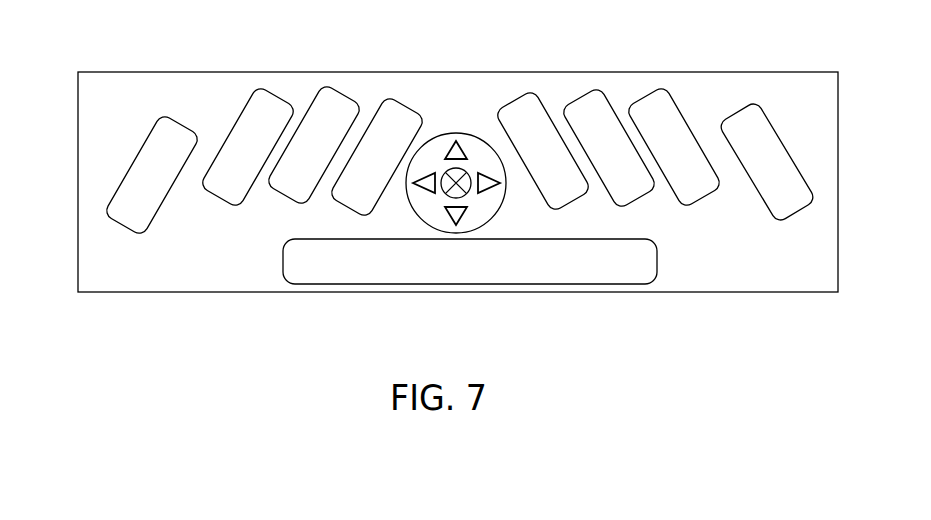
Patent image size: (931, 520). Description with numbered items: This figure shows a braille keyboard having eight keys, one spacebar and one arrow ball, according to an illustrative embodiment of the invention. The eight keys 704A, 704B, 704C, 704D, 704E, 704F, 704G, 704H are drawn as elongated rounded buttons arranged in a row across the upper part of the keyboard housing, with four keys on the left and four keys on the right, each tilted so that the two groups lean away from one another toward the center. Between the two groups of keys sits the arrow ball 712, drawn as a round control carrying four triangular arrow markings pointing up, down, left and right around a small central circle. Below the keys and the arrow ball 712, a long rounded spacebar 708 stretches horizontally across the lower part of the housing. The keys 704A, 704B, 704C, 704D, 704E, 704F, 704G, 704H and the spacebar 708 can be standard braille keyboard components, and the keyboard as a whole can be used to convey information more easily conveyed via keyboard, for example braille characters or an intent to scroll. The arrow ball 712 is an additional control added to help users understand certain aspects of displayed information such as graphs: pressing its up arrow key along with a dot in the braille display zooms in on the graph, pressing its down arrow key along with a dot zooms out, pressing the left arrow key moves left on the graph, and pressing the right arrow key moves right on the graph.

The key 704A is at (177, 119).
The key 704B is at (267, 86).
The key 704C is at (323, 90).
The key 704D is at (380, 105).
The key 704E is at (505, 98).
The key 704F is at (575, 98).
The key 704G is at (655, 88).
The key 704H is at (728, 117).
The arrow ball 712 is at (425, 220).
The spacebar 708 is at (577, 285).